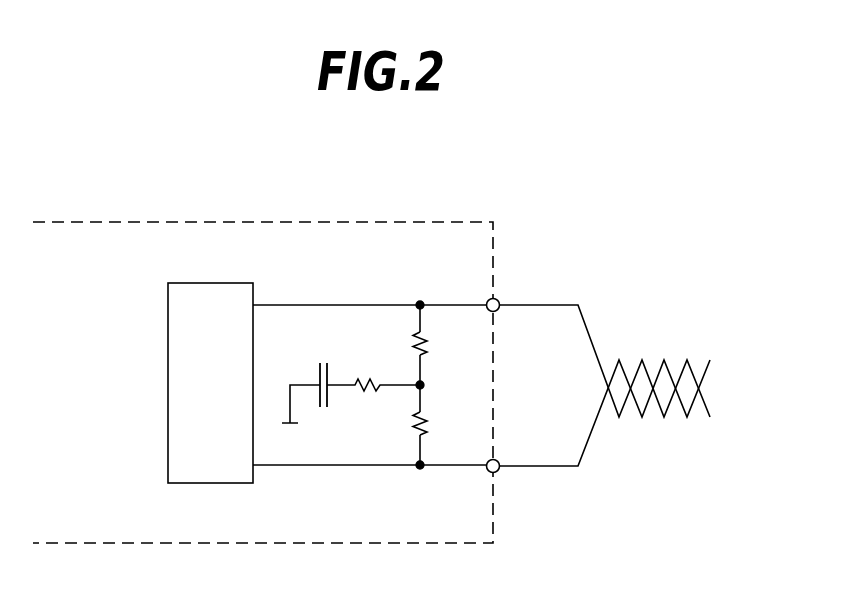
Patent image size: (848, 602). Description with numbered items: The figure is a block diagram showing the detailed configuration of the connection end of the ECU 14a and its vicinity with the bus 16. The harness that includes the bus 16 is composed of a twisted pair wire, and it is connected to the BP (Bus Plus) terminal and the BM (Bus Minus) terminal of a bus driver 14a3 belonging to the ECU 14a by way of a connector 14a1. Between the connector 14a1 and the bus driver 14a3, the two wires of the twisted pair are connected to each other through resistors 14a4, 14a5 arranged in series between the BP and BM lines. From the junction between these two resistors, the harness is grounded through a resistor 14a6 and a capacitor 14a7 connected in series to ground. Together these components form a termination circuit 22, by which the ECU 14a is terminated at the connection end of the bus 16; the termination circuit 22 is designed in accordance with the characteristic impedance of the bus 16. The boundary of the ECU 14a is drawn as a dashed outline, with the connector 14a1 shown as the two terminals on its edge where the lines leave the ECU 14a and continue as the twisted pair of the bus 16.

The ECU 14a is at (177, 220).
The connector 14a1 is at (498, 300).
The bus driver 14a3 is at (187, 282).
The resistor 14a4 is at (422, 357).
The resistor 14a5 is at (422, 437).
The resistor 14a6 is at (358, 390).
The capacitor 14a7 is at (318, 364).
The termination circuit 22 is at (379, 293).
The bus 16 is at (590, 333).